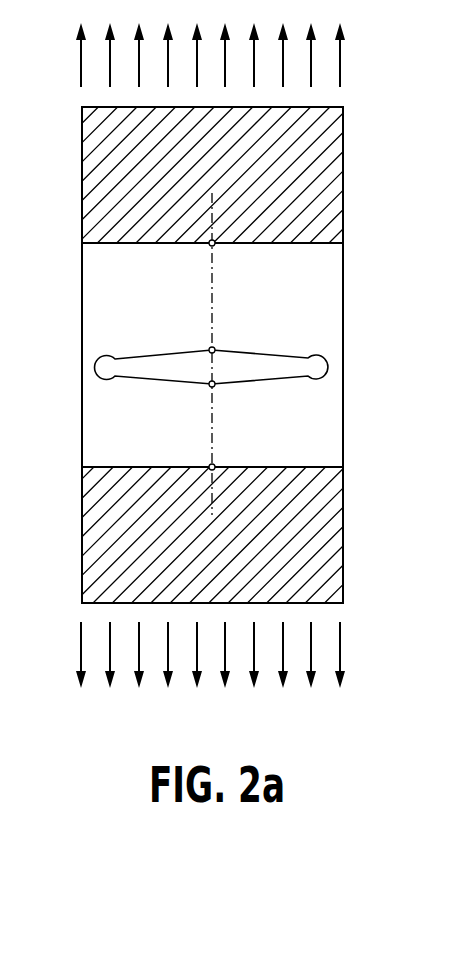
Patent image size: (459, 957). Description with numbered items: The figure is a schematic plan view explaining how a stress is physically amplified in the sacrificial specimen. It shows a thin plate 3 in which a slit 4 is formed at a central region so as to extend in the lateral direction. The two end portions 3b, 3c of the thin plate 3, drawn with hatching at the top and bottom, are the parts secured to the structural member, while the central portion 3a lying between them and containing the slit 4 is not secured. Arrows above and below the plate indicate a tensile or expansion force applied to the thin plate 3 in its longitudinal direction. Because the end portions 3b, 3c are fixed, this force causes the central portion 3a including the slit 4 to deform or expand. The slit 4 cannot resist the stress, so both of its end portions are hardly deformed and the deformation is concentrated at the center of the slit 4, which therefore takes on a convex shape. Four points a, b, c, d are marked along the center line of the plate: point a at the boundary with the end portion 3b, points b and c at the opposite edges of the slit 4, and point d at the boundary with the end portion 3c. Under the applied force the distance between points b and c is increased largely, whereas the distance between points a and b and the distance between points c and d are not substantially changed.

The thin plate 3 is at (66, 203).
The central portion 3a is at (357, 246).
The end portion 3b is at (357, 105).
The end portion 3c is at (357, 470).
The slit 4 is at (170, 372).
The point a is at (227, 256).
The point b is at (227, 339).
The point c is at (226, 396).
The point d is at (227, 454).